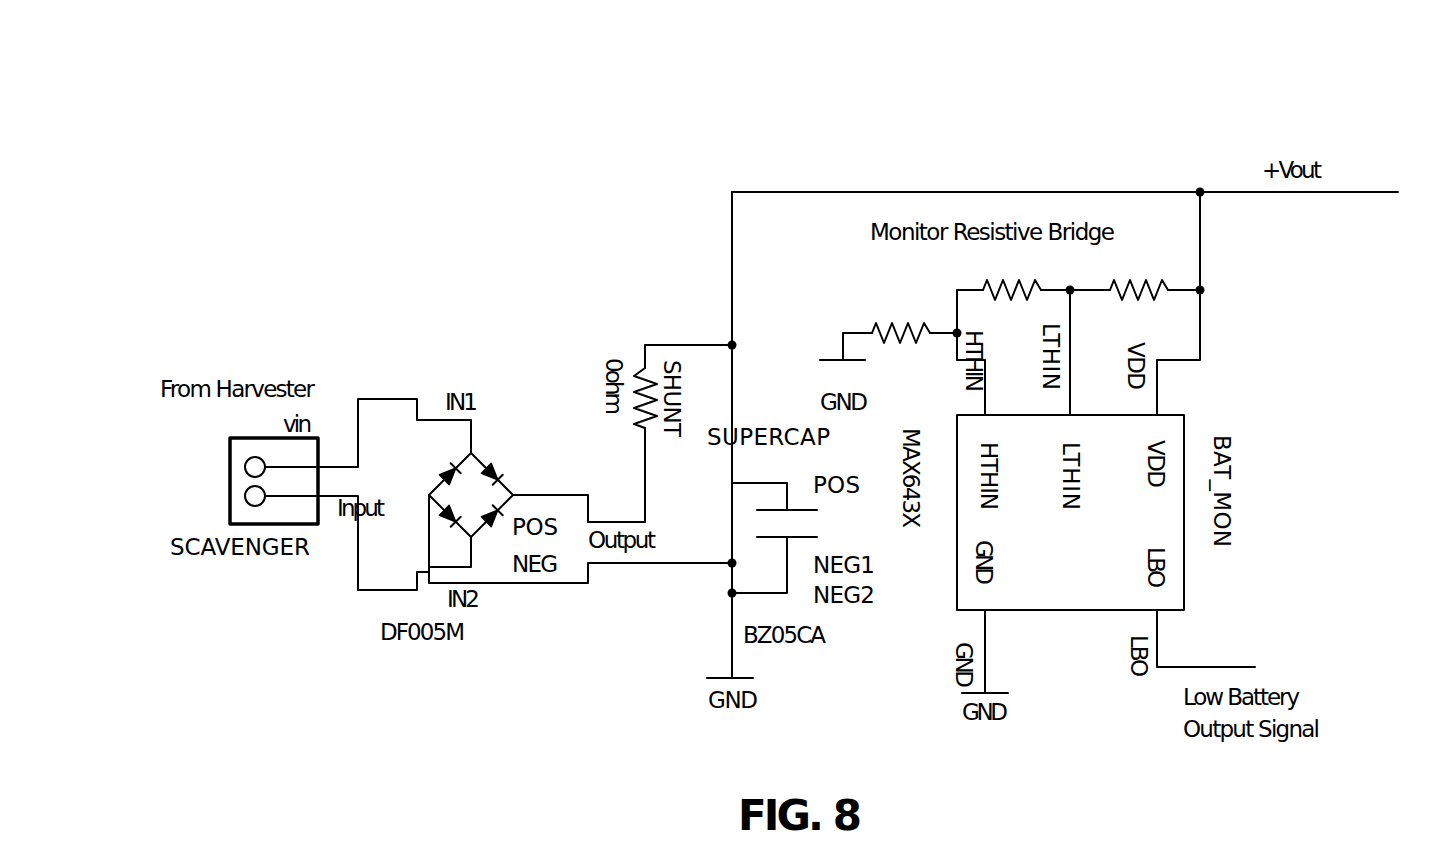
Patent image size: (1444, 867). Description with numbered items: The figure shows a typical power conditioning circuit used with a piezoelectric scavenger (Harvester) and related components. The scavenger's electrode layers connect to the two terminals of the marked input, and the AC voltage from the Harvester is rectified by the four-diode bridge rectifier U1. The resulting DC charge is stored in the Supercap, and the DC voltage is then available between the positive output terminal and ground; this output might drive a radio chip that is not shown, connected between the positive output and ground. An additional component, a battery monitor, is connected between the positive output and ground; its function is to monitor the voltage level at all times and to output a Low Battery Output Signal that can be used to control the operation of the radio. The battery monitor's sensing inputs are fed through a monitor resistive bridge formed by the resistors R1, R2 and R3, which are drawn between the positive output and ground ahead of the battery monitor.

The bridge rectifier DF005M U1 is at (446, 448).
The resistor R1_6433 4.3M R1 is at (1145, 292).
The resistor R2_6433 1k R2 is at (1033, 292).
The resistor R3 620 ohm R3 is at (888, 340).